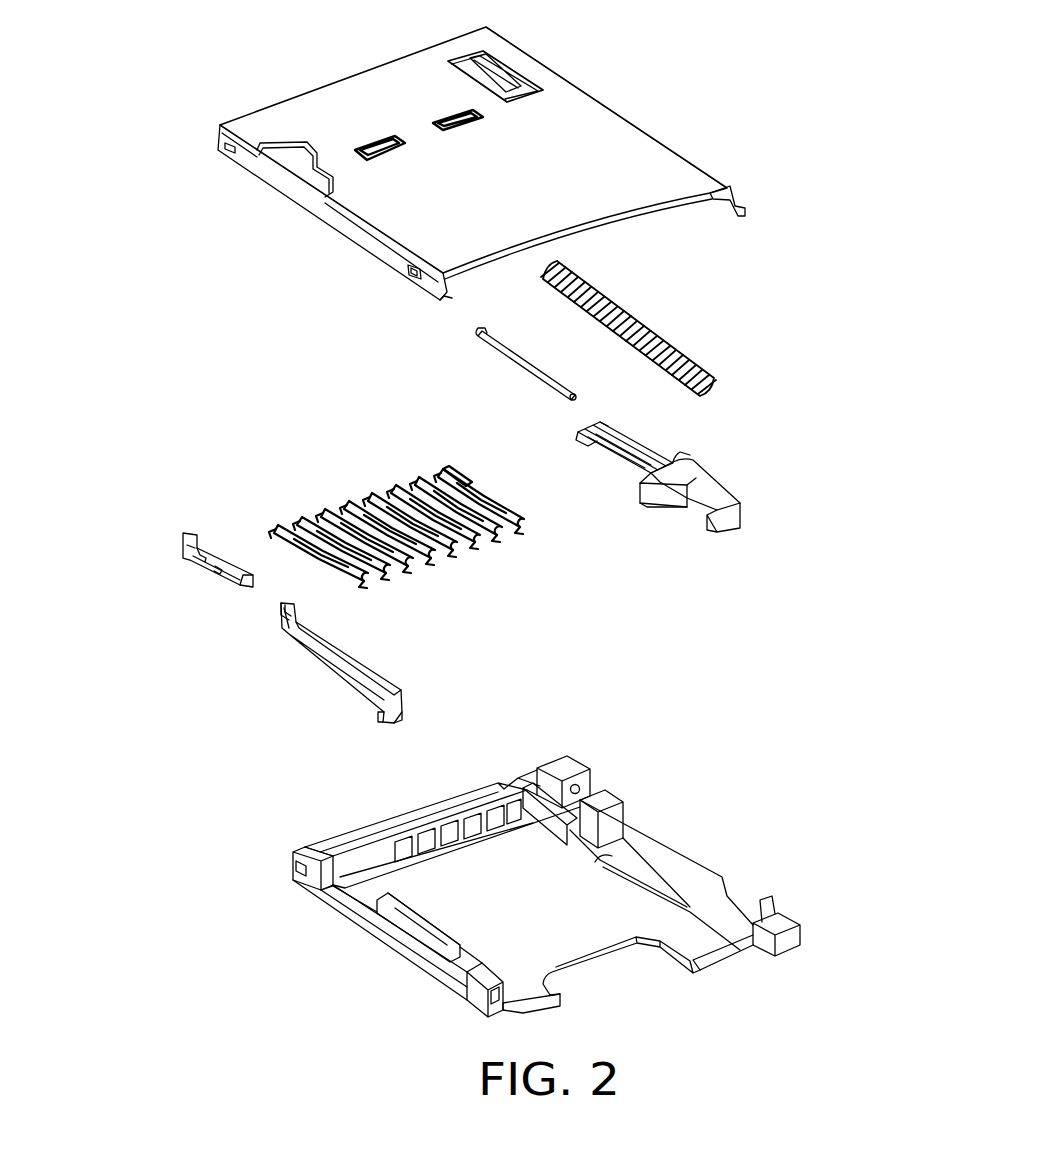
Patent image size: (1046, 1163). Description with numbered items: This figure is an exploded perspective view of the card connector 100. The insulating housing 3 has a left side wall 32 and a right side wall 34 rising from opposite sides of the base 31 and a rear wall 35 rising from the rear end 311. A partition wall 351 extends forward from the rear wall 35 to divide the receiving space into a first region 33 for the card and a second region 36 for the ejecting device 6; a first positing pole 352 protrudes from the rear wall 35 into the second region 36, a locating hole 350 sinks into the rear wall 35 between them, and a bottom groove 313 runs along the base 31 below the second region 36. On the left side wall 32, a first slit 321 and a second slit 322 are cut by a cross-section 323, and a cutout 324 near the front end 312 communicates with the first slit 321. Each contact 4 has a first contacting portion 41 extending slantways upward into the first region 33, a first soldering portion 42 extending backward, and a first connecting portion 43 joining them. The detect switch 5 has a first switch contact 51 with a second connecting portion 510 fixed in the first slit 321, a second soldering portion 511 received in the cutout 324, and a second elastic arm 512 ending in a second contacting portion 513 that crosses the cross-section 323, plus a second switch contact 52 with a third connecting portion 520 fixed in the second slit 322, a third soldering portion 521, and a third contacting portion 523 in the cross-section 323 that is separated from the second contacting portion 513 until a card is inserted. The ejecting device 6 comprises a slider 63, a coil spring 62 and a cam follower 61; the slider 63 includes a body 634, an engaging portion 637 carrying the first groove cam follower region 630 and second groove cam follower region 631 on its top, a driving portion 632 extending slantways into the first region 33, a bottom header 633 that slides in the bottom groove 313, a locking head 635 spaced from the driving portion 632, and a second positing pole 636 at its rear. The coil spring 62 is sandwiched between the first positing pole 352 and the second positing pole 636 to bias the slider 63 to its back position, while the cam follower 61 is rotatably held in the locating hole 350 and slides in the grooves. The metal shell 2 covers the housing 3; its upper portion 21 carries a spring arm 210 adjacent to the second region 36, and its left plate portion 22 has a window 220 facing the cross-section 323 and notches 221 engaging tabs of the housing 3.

The card connector 100 is at (822, 43).
The metal shell 2 is at (596, 78).
The upper portion 21 is at (613, 137).
The spring arm 210 is at (510, 90).
The left plate portion 22 is at (352, 223).
The window 220 is at (293, 180).
The notches 221 is at (415, 272).
The ejector mechanism 6 is at (683, 228).
The cam follower 61 is at (522, 356).
The coil spring 62 is at (614, 302).
The slider 63 is at (738, 462).
The first groove cam follower region 630 is at (645, 452).
The second groove cam follower region 631 is at (608, 455).
The driving portion 632 is at (683, 505).
The bottom header 633 is at (645, 503).
The body 634 is at (716, 489).
The locking head 635 is at (720, 530).
The second positing pole 636 is at (687, 457).
The engaging portion 637 is at (586, 432).
The contacts 4 is at (338, 483).
The first contacting portion 41 is at (522, 510).
The first soldering portion 42 is at (432, 472).
The first connecting portion 43 is at (461, 482).
The detect switch 5 is at (287, 745).
The first switch contact 51 is at (325, 676).
The second connecting portion 510 is at (370, 686).
The second soldering portion 511 is at (372, 715).
The second elastic arm 512 is at (330, 660).
The second contacting portion 513 is at (299, 615).
The second switch contact 52 is at (203, 582).
The third connecting portion 520 is at (209, 556).
The third soldering portion 521 is at (195, 562).
The third contacting portion 523 is at (246, 582).
The insulating housing 3 is at (736, 862).
The base 31 is at (552, 1000).
The left side wall 32 is at (425, 955).
The first region 33 is at (600, 952).
The right side wall 34 is at (775, 912).
The rear wall 35 is at (428, 802).
The second region 36 is at (663, 870).
The rear end 311 is at (363, 830).
The front end 312 is at (722, 968).
The bottom groove 313 is at (622, 850).
The first slit 321 is at (395, 918).
The second slit 322 is at (310, 850).
The cross-section 323 is at (340, 890).
The cutout 324 is at (458, 990).
The locating hole 350 is at (522, 782).
The partition wall 351 is at (535, 805).
The first positing pole 352 is at (580, 786).